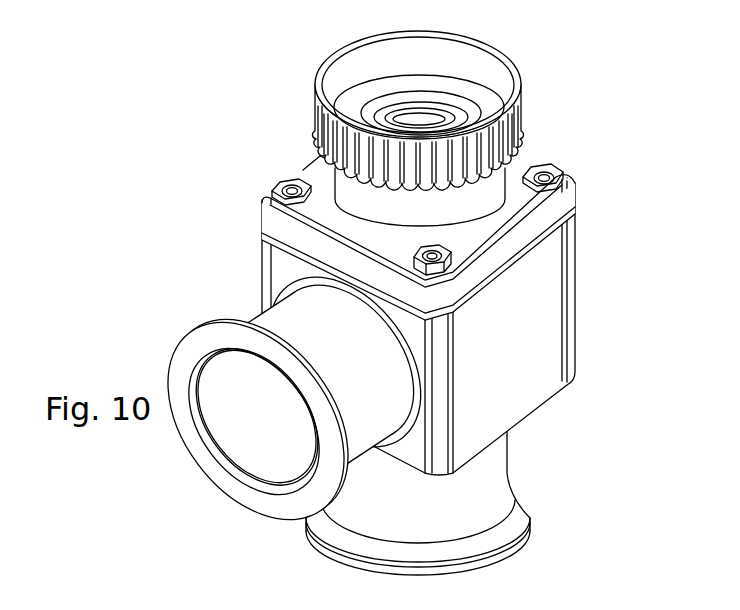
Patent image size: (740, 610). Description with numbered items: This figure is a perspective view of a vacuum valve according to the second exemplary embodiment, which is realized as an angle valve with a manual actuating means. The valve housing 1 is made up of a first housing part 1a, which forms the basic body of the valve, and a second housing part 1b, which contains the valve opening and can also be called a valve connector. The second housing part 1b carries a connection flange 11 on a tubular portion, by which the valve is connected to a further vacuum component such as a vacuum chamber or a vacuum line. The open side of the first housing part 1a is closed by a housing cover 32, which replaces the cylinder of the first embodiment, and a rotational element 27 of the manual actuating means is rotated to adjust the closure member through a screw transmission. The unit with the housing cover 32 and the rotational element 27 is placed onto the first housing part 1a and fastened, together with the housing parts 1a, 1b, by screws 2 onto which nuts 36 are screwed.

The valve housing 1 is at (606, 243).
The first housing part 1a is at (555, 355).
The second housing part 1b is at (487, 468).
The screws 2 is at (290, 183).
The connection flange 11 is at (66, 0).
The rotational element 27 is at (517, 87).
The housing cover 32 is at (560, 208).
The nuts 36 is at (548, 165).